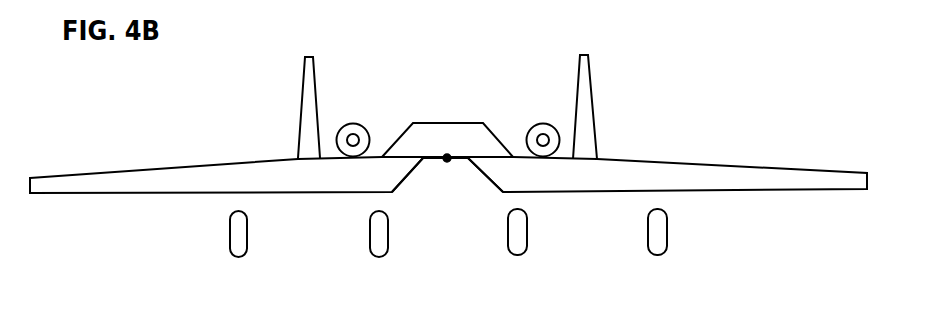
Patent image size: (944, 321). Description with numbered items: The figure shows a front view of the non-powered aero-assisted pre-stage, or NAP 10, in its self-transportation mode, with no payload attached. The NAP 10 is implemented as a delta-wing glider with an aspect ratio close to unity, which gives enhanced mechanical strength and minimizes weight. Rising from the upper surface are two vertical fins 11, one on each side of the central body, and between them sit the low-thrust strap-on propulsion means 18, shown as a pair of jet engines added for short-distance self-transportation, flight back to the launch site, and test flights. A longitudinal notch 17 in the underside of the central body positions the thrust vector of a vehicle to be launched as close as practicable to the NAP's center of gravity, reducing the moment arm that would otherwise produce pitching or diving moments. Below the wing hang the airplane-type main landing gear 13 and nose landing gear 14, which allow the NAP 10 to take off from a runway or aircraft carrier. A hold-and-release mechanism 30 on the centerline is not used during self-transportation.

The non-powered aero-assisted pre-stage (NAP) 10 is at (742, 167).
The vertical stabilizer 11 is at (300, 105).
The main landing gear 13 is at (228, 255).
The nose landing gear 14 is at (370, 249).
The longitudinal notch 17 is at (403, 185).
The low-power strap-on self-transportation propulsion means 18 is at (358, 123).
The hold-and-release mechanism 30 is at (448, 155).